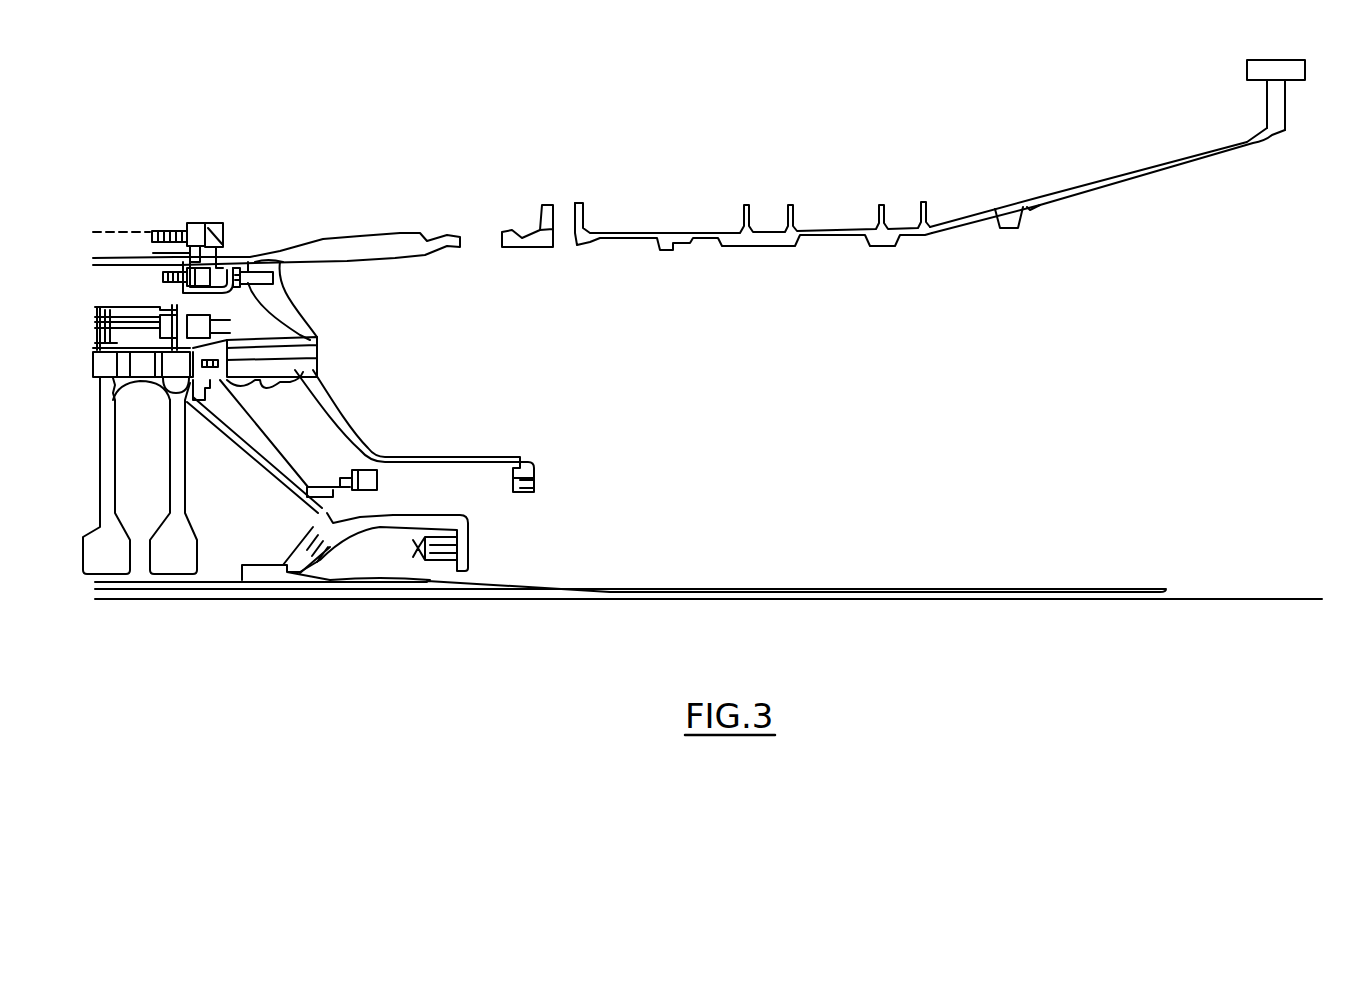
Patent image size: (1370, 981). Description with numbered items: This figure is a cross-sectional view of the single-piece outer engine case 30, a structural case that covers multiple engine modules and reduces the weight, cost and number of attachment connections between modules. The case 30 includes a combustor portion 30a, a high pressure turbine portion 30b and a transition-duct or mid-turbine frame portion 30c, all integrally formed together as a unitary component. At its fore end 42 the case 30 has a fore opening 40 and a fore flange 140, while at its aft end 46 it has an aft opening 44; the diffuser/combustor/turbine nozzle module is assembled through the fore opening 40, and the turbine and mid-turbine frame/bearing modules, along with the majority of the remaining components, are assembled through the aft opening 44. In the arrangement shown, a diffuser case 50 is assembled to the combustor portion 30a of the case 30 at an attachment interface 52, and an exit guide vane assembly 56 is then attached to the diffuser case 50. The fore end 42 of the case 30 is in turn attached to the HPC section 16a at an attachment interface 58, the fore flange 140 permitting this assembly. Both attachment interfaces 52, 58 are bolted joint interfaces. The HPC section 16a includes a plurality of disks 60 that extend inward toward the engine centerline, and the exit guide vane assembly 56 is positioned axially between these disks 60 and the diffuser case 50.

The HPC section 16a is at (128, 232).
The single-piece outer engine case 30 is at (963, 215).
The combustor portion 30a is at (307, 243).
The turbine portion 30b is at (708, 240).
The transition-duct portion 30c is at (1143, 177).
The fore opening 40 is at (172, 283).
The fore end 42 is at (218, 222).
The aft opening 44 is at (1245, 142).
The aft end 46 is at (1305, 70).
The diffuser case 50 is at (337, 432).
The attachment interface 52 is at (276, 280).
The exit guide vane assembly 56 is at (243, 425).
The attachment interface 58 is at (170, 226).
The disks 60 is at (166, 532).
The fore flange 140 is at (223, 238).